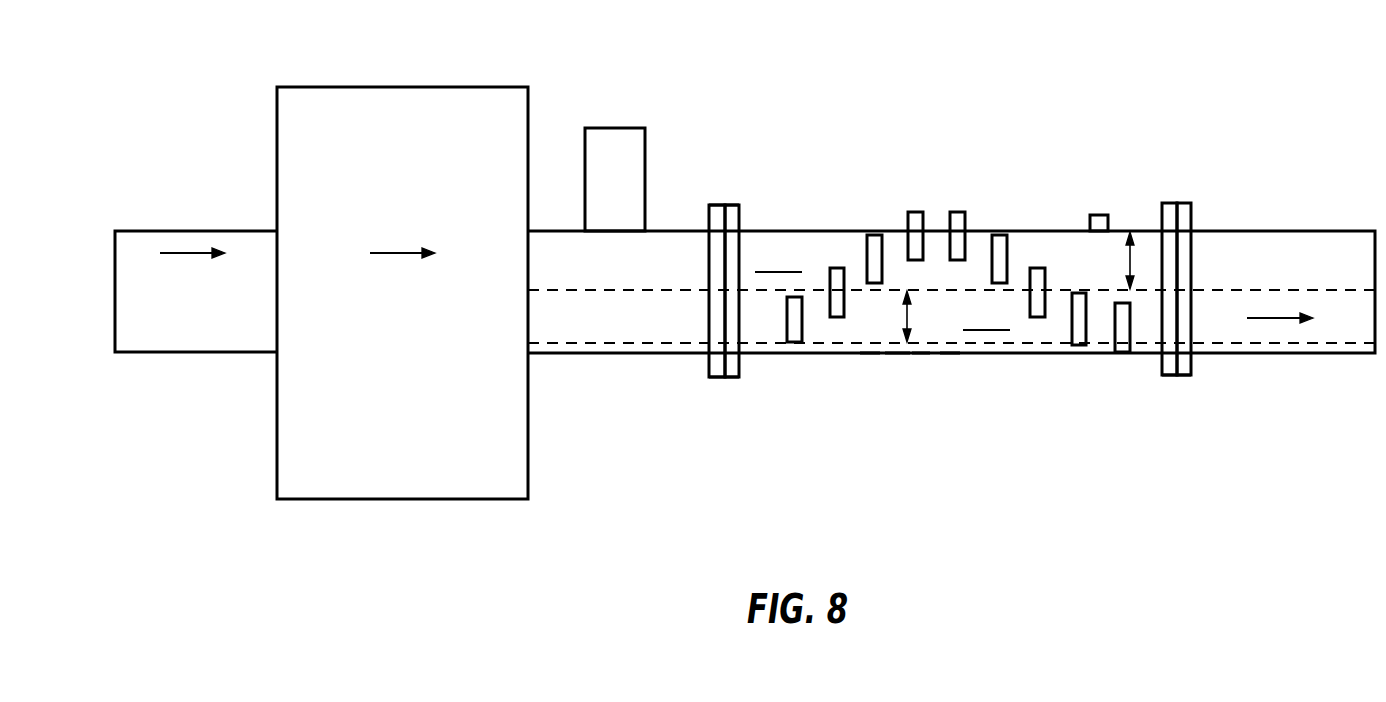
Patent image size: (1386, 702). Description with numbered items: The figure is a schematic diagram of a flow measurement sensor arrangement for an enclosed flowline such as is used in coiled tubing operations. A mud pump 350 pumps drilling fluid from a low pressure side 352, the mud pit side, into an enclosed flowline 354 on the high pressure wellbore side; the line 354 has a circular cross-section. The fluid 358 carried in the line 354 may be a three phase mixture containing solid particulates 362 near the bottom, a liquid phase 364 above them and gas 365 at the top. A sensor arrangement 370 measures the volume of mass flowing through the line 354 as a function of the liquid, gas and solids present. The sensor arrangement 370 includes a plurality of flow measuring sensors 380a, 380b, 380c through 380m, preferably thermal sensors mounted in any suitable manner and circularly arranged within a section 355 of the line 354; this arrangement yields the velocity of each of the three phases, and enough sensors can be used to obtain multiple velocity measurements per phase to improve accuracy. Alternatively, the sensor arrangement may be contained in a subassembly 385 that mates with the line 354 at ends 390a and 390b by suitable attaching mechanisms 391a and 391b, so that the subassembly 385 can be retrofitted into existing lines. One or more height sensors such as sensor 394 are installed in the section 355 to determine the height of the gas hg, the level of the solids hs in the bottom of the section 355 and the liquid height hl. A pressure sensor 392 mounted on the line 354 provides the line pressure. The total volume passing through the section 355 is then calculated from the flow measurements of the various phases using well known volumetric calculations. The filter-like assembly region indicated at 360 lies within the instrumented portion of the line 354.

The mud pump 350 is at (402, 268).
The low pressure side 352 is at (195, 265).
The enclosed flowline 354 is at (951, 319).
The section of the line 355 is at (855, 413).
The fluid 358 is at (1305, 289).
The filter assembly 360 is at (836, 390).
The solid particulates 362 is at (1009, 386).
The liquid phase 364 is at (989, 313).
The gas 365 is at (781, 257).
The sensor arrangement 370 is at (1035, 231).
The flow measuring sensor 380a is at (739, 385).
The flow measuring sensor 380b is at (897, 219).
The flow measuring sensor 380c is at (921, 225).
The flow measuring sensor 380m is at (1185, 384).
The subassembly 385 is at (766, 189).
The end 390a is at (688, 405).
The end 390b is at (1216, 403).
The attaching mechanism 391a is at (773, 251).
The attaching mechanism 391b is at (1222, 269).
The pressure sensor 392 is at (657, 177).
The height sensor 394 is at (1050, 189).
The level of the solids hs is at (855, 342).
The liquid height hl is at (953, 404).
The height of the gas hg is at (1178, 203).